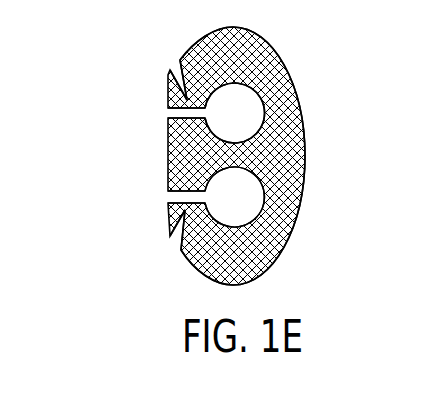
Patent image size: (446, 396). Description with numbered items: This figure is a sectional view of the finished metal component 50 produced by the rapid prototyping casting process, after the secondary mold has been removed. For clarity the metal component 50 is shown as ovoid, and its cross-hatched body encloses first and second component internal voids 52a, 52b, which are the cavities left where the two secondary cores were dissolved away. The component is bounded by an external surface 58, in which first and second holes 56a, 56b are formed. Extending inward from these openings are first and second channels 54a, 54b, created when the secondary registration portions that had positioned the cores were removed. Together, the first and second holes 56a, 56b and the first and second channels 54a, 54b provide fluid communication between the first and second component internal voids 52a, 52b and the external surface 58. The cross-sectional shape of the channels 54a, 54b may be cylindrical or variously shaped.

The metal component 50 is at (170, 156).
The first component internal void 52a is at (258, 122).
The second component internal void 52b is at (258, 207).
The first channel 54a is at (186, 98).
The second channel 54b is at (184, 213).
The first hole 56a is at (122, 128).
The second hole 56b is at (124, 214).
The external surface 58 is at (283, 156).